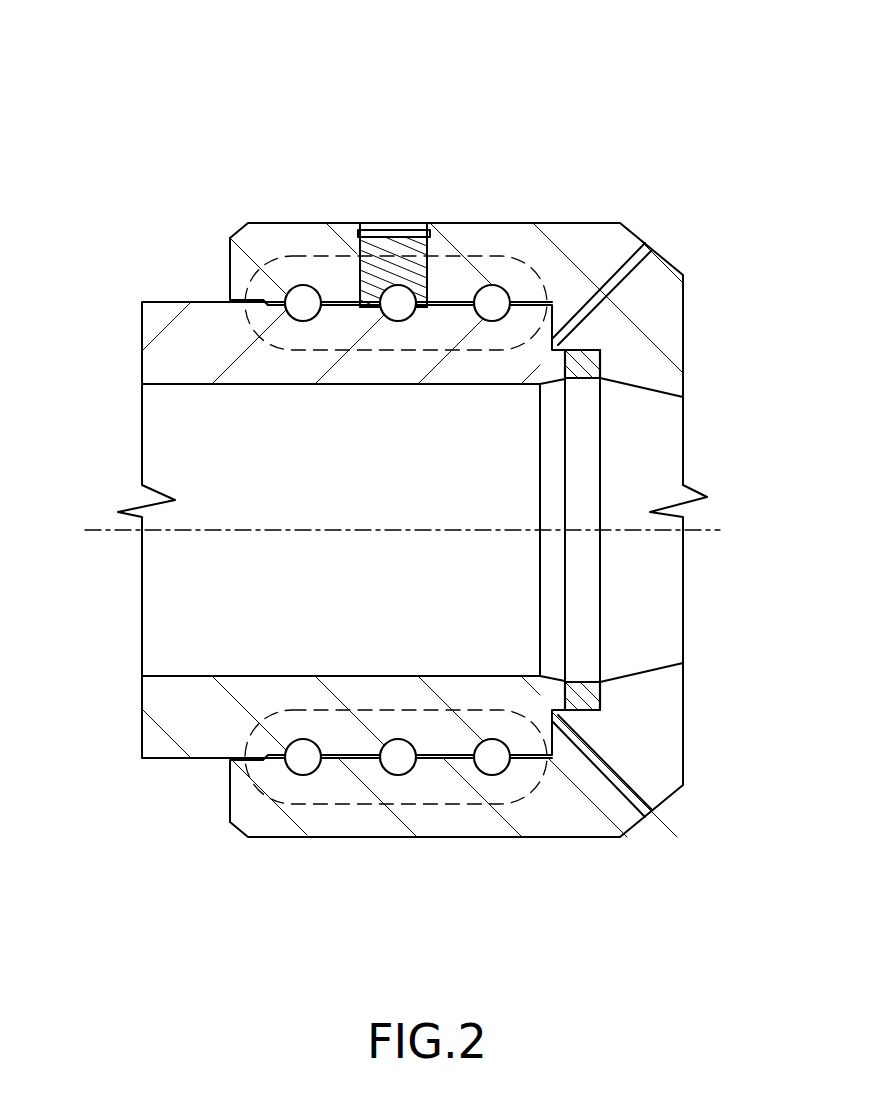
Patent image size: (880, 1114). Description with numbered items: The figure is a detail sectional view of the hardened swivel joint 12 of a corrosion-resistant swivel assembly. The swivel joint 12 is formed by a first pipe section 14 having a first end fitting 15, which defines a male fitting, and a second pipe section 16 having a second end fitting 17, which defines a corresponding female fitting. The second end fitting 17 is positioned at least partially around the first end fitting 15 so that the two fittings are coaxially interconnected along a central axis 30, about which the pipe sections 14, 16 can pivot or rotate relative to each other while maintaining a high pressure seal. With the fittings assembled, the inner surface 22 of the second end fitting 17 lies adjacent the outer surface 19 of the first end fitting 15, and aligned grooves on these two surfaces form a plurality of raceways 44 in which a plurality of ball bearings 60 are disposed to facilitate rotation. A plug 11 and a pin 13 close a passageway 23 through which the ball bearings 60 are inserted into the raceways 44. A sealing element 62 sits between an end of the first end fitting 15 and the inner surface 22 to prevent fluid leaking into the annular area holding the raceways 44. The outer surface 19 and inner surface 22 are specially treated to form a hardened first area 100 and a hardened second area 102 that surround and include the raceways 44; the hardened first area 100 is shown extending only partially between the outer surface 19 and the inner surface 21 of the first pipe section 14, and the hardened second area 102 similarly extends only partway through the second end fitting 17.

The plug 11 is at (424, 283).
The swivel joint 12 is at (430, 96).
The pin 13 is at (376, 230).
The first pipe section 14 is at (174, 303).
The first end fitting 15 is at (218, 303).
The second pipe section 16 is at (518, 222).
The second end fitting 17 is at (558, 222).
The outer surface 19 is at (207, 758).
The inner surface 21 is at (331, 385).
The inner surface 22 is at (262, 311).
The passageway 23 is at (420, 293).
The central axis 30 is at (406, 533).
The raceways 44 is at (300, 292).
The ball bearings 60 is at (303, 312).
The sealing element 62 is at (602, 350).
The hardened first area 100 is at (431, 347).
The hardened second area 102 is at (307, 253).